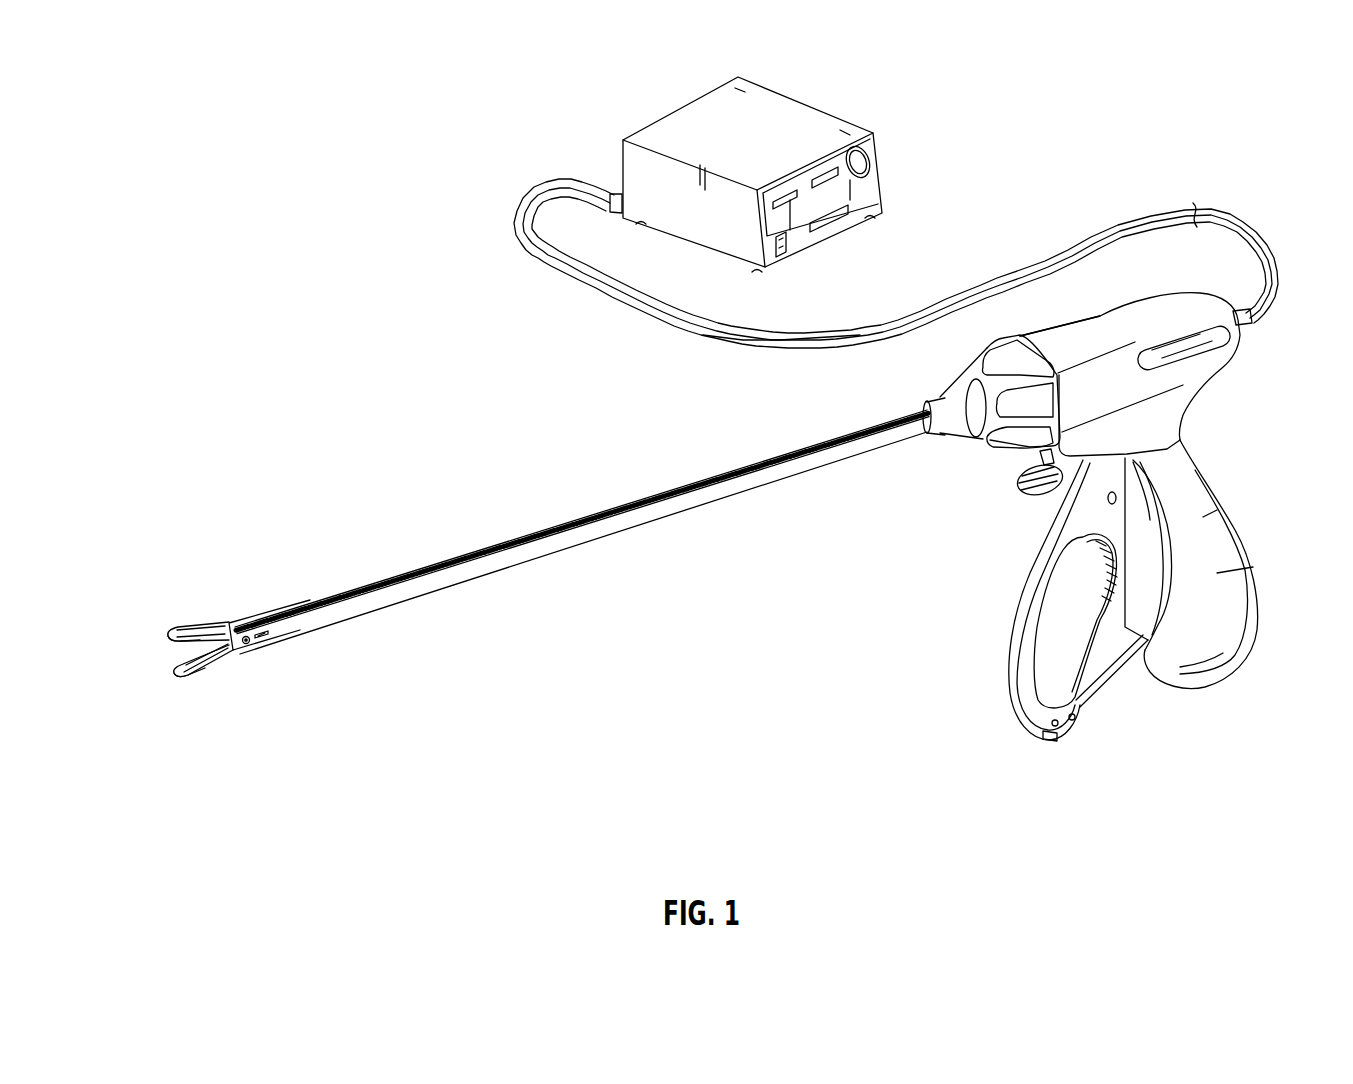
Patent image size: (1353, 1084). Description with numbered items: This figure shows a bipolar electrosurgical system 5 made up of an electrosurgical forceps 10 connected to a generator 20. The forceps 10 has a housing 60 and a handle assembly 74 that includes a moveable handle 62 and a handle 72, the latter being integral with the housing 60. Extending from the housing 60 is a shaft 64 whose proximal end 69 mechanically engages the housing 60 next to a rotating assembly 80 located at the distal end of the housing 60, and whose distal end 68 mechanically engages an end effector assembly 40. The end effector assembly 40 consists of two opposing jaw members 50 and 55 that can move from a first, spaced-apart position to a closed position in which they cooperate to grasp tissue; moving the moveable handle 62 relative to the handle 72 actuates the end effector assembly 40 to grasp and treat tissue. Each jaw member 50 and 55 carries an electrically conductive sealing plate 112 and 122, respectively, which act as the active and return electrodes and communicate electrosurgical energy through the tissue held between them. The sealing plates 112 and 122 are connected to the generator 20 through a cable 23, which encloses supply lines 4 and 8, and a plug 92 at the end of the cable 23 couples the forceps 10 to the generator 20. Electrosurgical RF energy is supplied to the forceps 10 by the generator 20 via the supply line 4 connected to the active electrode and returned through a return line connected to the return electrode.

The bipolar electrosurgical system 5 is at (994, 160).
The electrosurgical forceps 10 is at (456, 524).
The generator 20 is at (699, 117).
The plug 92 is at (617, 192).
The supply line 8 is at (757, 330).
The supply line 4 is at (743, 347).
The cable 23 is at (1236, 247).
The housing 60 is at (1151, 295).
The proximal end of shaft 69 is at (922, 410).
The rotating assembly 80 is at (955, 411).
The shaft 64 is at (722, 480).
The distal end of shaft 68 is at (285, 634).
The end effector assembly 40 is at (213, 660).
The jaw member 50 is at (189, 601).
The jaw member 55 is at (183, 701).
The electrically conductive sealing plate 112 is at (172, 637).
The electrically conductive sealing plate 122 is at (176, 666).
The handle assembly 74 is at (1060, 621).
The handle 72 is at (1176, 696).
The moveable handle 62 is at (1067, 751).